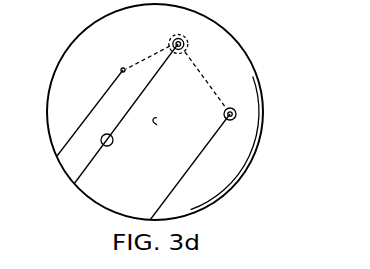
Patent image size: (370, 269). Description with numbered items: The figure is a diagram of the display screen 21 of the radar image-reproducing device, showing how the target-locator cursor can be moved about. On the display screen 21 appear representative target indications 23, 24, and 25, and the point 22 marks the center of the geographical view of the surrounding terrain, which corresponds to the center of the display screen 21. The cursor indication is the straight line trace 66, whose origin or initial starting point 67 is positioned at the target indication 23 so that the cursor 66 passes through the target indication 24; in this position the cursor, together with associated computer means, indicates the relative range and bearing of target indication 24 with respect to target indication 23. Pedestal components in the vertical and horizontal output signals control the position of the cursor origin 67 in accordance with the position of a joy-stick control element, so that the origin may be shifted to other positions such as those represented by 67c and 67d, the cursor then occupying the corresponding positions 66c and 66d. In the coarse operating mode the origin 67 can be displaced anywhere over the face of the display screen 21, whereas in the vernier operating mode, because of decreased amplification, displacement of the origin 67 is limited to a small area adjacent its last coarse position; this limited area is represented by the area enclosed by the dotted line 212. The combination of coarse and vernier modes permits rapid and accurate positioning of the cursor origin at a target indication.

The display screen 21 is at (71, 45).
The dotted line 212 is at (168, 43).
The target indication 23 is at (189, 43).
The cursor origin 67 is at (186, 49).
The cursor origin position 67c is at (121, 70).
The cursor origin position 67d is at (233, 108).
The cursor trace 66 is at (126, 115).
The cursor position 66c is at (83, 122).
The cursor position 66d is at (202, 153).
The target indication 24 is at (101, 141).
The target indication 25 is at (236, 118).
The center point 22 is at (166, 124).